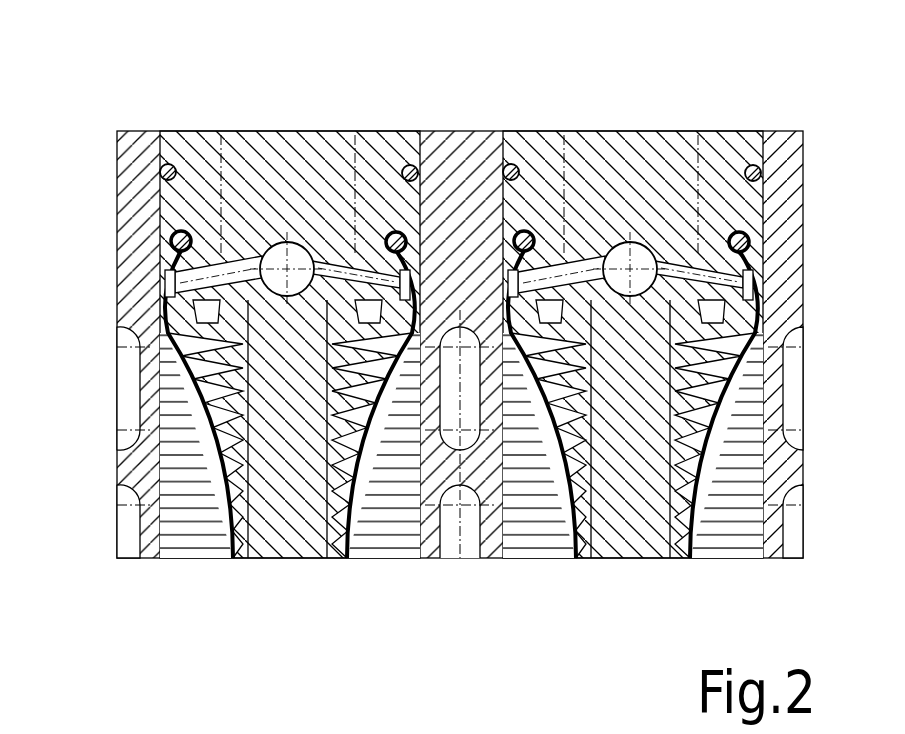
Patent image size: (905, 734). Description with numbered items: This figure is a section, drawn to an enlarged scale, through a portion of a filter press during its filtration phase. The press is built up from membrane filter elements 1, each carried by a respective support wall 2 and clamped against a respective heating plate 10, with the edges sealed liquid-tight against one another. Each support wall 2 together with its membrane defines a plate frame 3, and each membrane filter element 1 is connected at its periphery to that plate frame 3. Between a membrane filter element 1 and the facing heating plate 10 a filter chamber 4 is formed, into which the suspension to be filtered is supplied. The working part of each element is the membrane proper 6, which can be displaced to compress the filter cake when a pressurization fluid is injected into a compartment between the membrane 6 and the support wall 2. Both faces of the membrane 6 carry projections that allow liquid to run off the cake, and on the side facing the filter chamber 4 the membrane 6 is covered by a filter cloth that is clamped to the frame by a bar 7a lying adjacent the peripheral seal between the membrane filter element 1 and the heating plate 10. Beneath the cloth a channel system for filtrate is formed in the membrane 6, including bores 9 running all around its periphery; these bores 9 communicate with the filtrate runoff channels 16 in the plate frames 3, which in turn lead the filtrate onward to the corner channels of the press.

The membrane filter element 1 is at (288, 132).
The support wall 2 is at (287, 536).
The plate frame 3 is at (390, 163).
The filter chamber 4 is at (185, 518).
The membrane 6 is at (231, 518).
The bar 7a is at (181, 233).
The bore 9 is at (170, 322).
The heating plate 10 is at (469, 150).
The filtrate runoff channel 16 is at (281, 245).